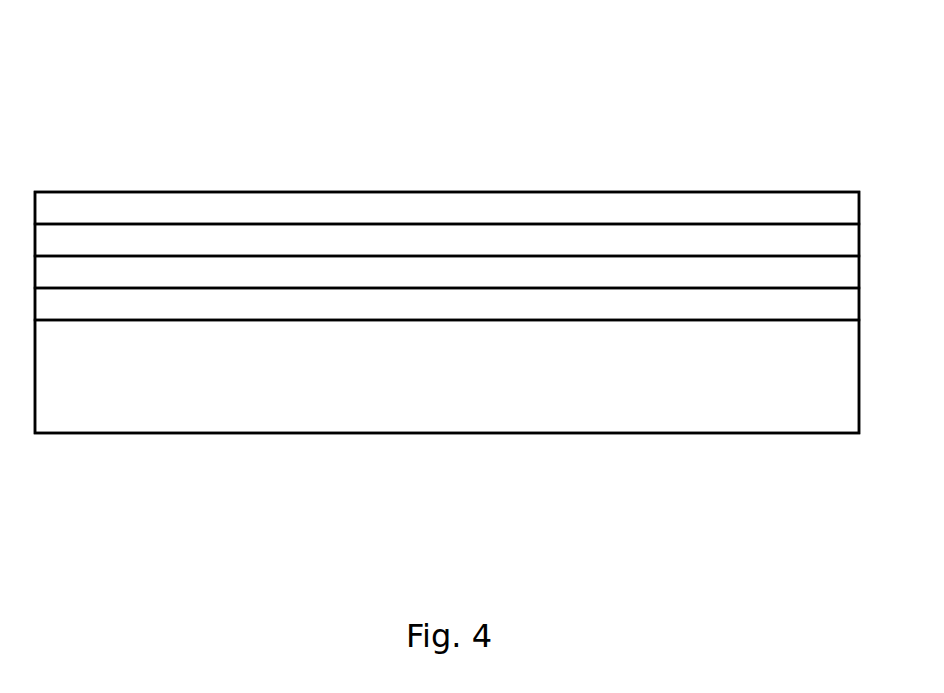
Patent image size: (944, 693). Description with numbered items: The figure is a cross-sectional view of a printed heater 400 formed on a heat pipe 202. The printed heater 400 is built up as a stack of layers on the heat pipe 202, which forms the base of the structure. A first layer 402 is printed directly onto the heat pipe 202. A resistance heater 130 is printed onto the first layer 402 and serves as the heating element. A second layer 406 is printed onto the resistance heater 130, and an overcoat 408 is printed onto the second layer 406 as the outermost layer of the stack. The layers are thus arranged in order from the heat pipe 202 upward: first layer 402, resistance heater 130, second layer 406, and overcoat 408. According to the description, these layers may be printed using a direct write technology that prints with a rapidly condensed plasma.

The printed heater 400 is at (465, 100).
The overcoat 408 is at (428, 218).
The second layer 406 is at (428, 252).
The resistance heater 130 is at (428, 284).
The first layer 402 is at (428, 316).
The heat pipe 202 is at (428, 400).